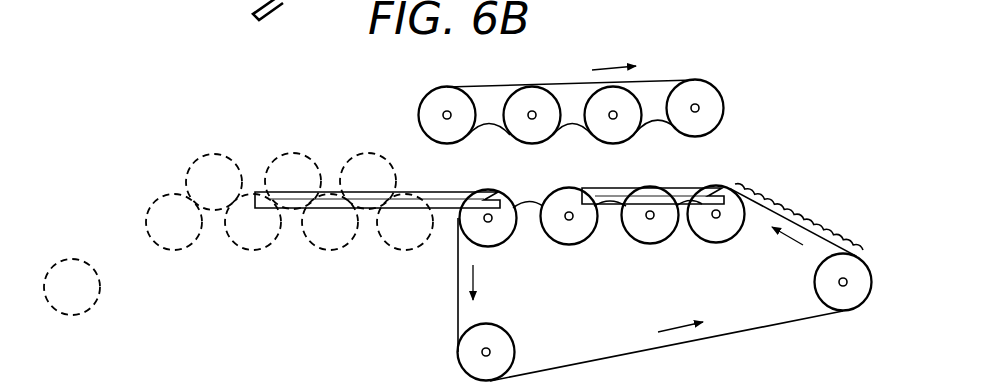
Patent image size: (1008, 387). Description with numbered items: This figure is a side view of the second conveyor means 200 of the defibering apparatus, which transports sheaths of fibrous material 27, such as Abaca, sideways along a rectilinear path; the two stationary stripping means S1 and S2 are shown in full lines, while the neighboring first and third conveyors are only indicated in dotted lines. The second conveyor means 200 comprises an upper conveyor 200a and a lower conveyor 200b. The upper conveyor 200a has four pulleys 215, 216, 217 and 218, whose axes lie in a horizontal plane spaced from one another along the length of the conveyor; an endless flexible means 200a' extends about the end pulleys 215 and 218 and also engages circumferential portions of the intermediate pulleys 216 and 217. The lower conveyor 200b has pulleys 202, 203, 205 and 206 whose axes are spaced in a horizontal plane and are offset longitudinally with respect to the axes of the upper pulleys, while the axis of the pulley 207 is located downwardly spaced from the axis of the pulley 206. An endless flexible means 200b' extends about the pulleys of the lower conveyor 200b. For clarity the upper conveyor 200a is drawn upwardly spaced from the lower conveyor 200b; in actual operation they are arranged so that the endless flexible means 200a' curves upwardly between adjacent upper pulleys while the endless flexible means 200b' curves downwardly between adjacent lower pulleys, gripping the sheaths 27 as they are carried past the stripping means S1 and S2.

The second conveyor means 200 is at (721, 164).
The upper conveyor 200a is at (629, 91).
The endless flexible means 200a' is at (576, 56).
The lower conveyor 200b is at (848, 239).
The endless flexible means 200b' is at (666, 346).
The pulley 202 is at (719, 235).
The pulley 203 is at (645, 235).
The pulley 205 is at (572, 235).
The pulley 206 is at (498, 235).
The pulley 207 is at (505, 352).
The pulley 215 is at (706, 109).
The pulley 216 is at (623, 127).
The pulley 217 is at (544, 127).
The pulley 218 is at (440, 110).
The sheaths of fibrous material 27 is at (764, 193).
The stripping means S1 is at (693, 170).
The stripping means S2 is at (407, 210).